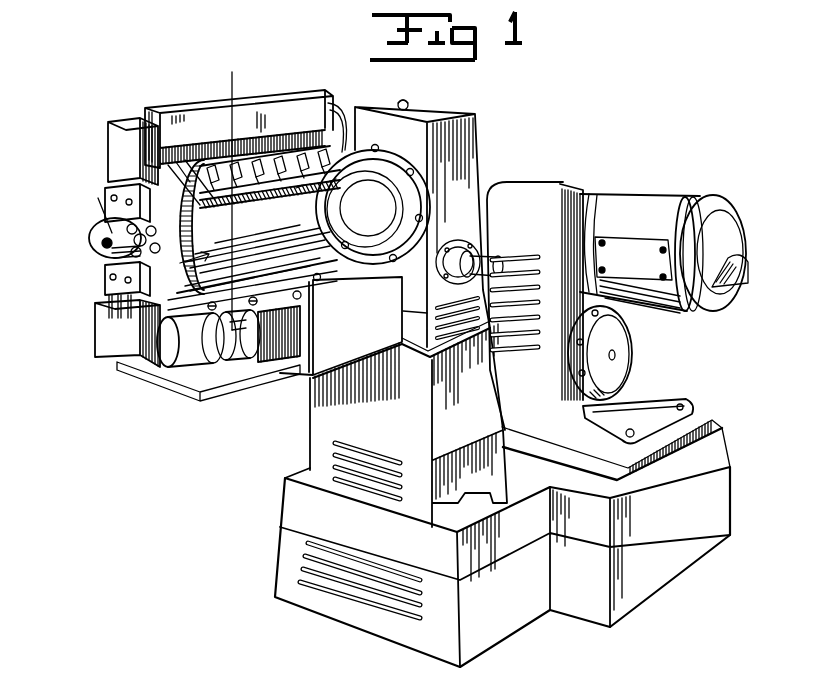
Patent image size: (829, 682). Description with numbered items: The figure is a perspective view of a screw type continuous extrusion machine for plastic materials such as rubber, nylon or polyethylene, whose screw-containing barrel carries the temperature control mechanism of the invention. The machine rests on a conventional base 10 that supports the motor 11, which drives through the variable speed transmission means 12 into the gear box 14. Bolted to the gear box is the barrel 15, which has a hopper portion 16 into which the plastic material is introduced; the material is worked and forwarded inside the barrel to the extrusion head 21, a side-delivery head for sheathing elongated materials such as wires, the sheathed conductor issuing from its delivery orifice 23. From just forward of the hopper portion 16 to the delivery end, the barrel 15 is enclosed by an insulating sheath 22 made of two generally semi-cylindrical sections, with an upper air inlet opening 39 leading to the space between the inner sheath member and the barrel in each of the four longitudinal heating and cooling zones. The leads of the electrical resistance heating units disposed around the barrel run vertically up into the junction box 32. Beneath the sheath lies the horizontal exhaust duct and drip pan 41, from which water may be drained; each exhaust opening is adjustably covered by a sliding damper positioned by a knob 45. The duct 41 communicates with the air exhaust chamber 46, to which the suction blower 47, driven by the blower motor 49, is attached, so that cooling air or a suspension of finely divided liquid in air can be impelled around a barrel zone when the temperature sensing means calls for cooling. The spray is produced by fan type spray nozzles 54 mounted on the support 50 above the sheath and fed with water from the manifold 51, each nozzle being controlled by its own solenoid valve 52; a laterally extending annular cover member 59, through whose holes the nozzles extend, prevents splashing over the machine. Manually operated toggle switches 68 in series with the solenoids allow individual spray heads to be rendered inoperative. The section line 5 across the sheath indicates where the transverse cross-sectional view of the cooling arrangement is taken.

The base 10 is at (275, 520).
The motor 11 is at (667, 195).
The variable speed transmission means 12 is at (540, 186).
The gear box 14 is at (440, 112).
The barrel 15 is at (96, 293).
The hopper portion 16 is at (345, 143).
The extrusion head 21 is at (95, 235).
The insulating sheath 22 is at (142, 332).
The delivery orifice 23 is at (105, 263).
The junction box 32 is at (175, 108).
The upper air inlet opening 39 is at (165, 175).
The horizontal exhaust duct and drip pan 41 is at (175, 330).
The knob 45 is at (246, 278).
The air exhaust chamber 46 is at (330, 357).
The suction blower 47 is at (235, 355).
The blower motor 49 is at (195, 355).
The support 50 is at (300, 188).
The manifold 51 is at (330, 182).
The solenoid valve 52 is at (330, 78).
The fan type spray nozzle 54 is at (292, 128).
The annular cover member 59 is at (178, 162).
The toggle switch 68 is at (222, 160).
The section line 5 is at (228, 79).